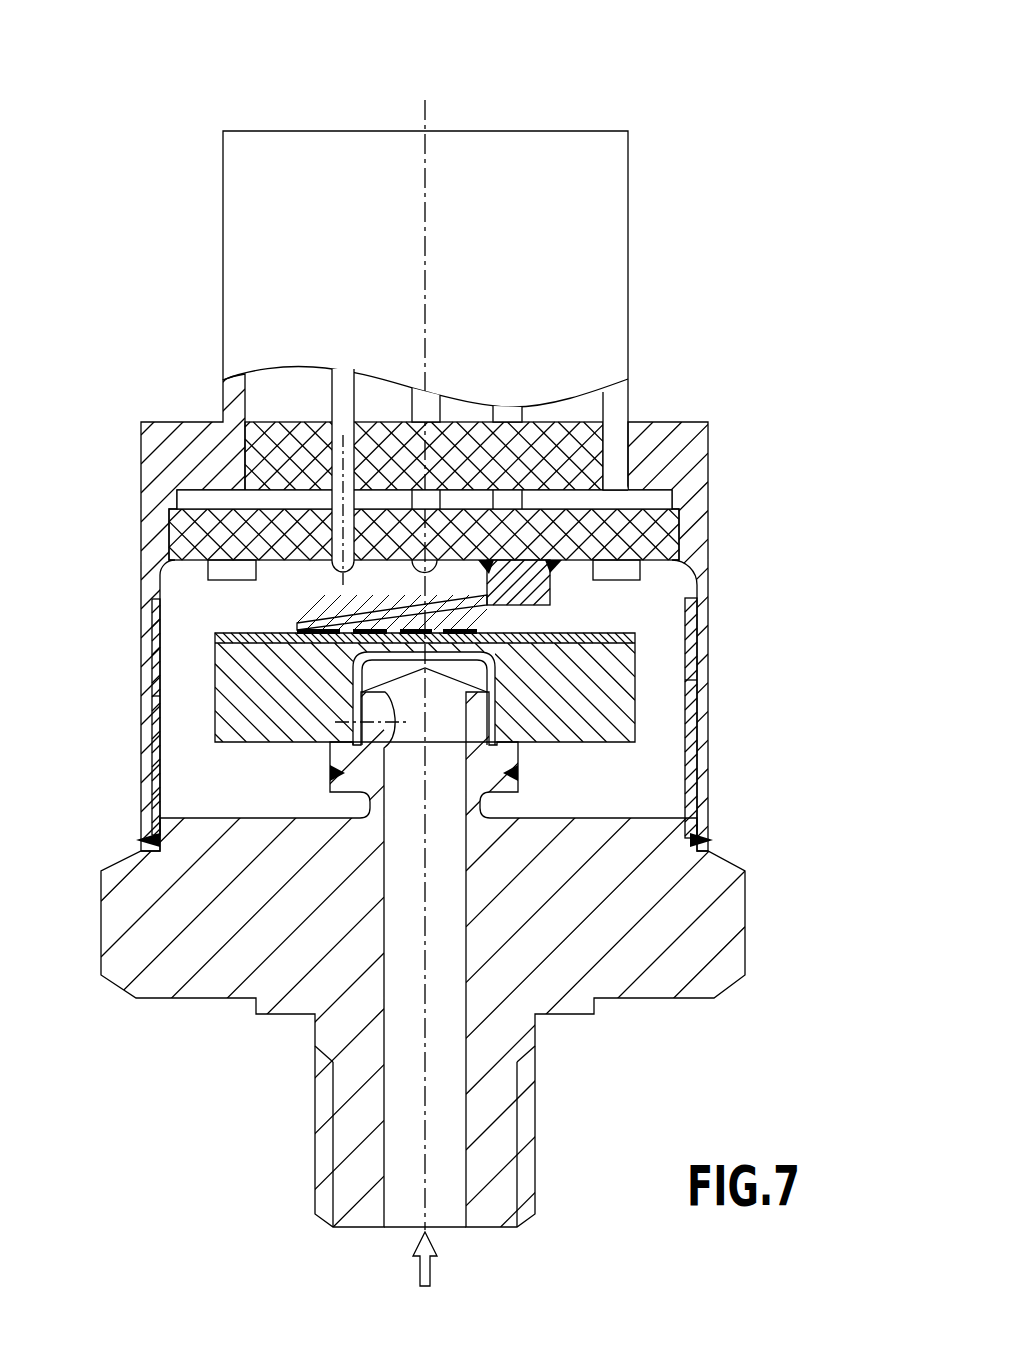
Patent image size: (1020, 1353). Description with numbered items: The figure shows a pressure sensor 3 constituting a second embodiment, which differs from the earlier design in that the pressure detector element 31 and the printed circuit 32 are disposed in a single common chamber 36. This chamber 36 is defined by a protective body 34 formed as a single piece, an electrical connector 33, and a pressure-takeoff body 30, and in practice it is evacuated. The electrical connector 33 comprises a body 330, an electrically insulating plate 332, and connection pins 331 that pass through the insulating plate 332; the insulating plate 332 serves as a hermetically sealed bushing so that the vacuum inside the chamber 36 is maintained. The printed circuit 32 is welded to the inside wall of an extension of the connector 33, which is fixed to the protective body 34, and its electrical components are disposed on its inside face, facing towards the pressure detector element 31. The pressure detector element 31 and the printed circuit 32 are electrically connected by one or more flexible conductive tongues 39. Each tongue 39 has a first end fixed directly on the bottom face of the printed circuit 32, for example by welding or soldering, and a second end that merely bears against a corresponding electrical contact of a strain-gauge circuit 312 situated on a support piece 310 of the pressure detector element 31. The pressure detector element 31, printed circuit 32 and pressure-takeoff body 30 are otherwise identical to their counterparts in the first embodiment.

The pressure sensor 3 is at (688, 92).
The pressure-takeoff body 30 is at (730, 928).
The pressure detector element 31 is at (658, 738).
The support piece 310 is at (618, 668).
The strain-gauge circuit 312 is at (589, 622).
The printed circuit 32 is at (665, 528).
The electrical connector 33 is at (645, 243).
The body 330 is at (238, 269).
The connection pins 331 is at (166, 540).
The electrically insulating plate 332 is at (603, 452).
The protective body 34 is at (152, 756).
The chamber 36 is at (662, 707).
The flexible conductive tongues 39 is at (380, 596).